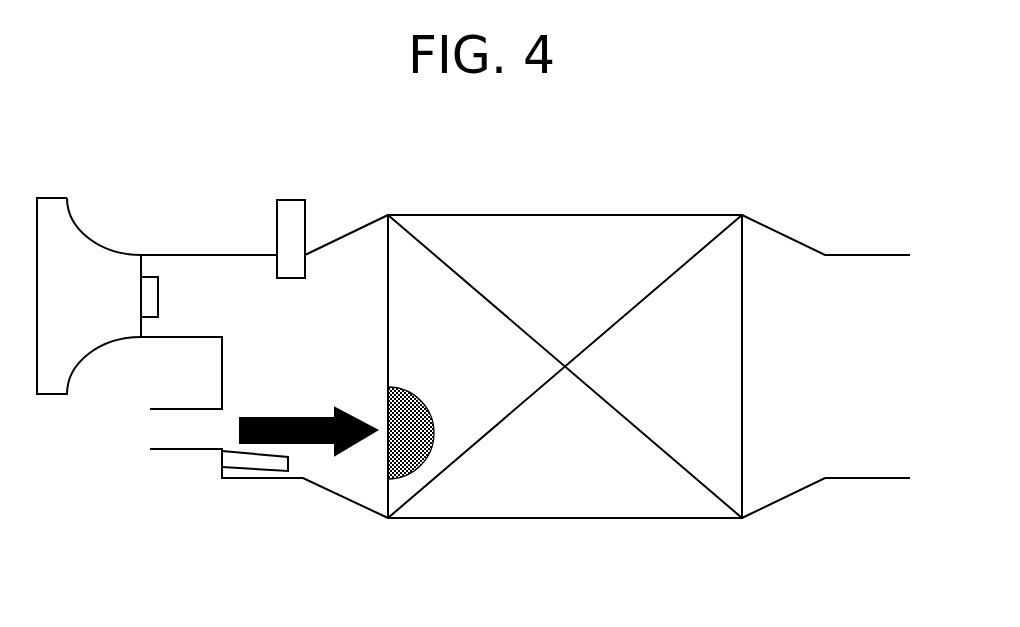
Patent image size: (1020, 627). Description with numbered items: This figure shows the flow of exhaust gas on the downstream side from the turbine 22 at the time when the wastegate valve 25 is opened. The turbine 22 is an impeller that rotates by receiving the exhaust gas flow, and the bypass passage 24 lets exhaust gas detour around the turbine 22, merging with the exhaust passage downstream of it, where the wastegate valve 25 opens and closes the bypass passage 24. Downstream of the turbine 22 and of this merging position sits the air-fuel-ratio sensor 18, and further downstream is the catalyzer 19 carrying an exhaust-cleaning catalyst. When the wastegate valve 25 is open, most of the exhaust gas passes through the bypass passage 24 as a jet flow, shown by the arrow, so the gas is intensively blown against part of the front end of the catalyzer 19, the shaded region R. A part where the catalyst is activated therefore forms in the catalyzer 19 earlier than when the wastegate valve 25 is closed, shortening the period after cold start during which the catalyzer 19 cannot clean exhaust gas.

The air-fuel-ratio sensor 18 is at (276, 223).
The catalyzer 19 is at (560, 227).
The turbine 22 is at (93, 240).
The bypass passage 24 is at (188, 453).
The wastegate valve 25 is at (253, 472).
The deposit region R is at (423, 407).